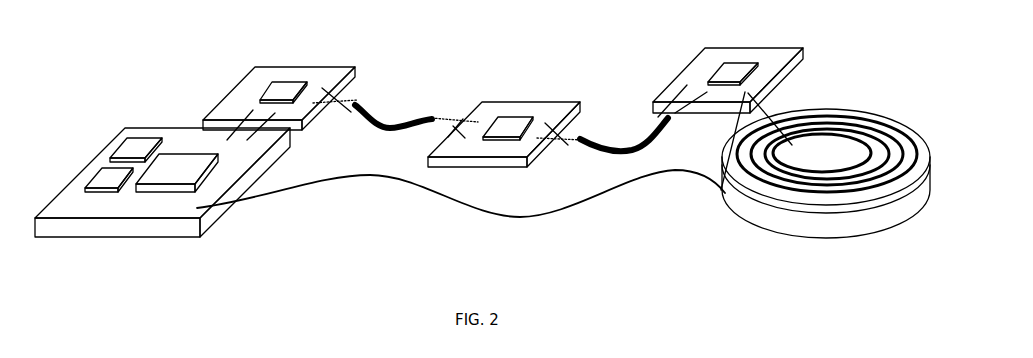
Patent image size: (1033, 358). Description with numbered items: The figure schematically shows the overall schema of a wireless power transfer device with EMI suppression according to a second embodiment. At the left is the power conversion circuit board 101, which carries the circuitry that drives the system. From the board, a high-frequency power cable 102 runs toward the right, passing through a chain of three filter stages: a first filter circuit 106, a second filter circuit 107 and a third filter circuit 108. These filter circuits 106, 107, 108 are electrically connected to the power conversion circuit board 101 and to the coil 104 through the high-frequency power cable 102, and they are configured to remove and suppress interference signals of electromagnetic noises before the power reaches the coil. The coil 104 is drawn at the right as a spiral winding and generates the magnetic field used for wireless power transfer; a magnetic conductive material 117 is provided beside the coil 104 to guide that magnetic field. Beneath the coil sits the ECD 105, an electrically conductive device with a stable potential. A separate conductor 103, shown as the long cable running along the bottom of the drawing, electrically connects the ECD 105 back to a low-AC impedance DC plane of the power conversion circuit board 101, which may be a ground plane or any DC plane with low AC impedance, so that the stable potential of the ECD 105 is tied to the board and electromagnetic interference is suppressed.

The power conversion circuit board 101 is at (166, 126).
The high-frequency power cable 102 is at (389, 101).
The conductor 103 is at (503, 223).
The coil 104 is at (835, 107).
The ECD 105 is at (747, 222).
The first filter circuit 106 is at (249, 68).
The second filter circuit 107 is at (507, 96).
The third filter circuit 108 is at (780, 48).
The magnetic conductive material 117 is at (801, 97).